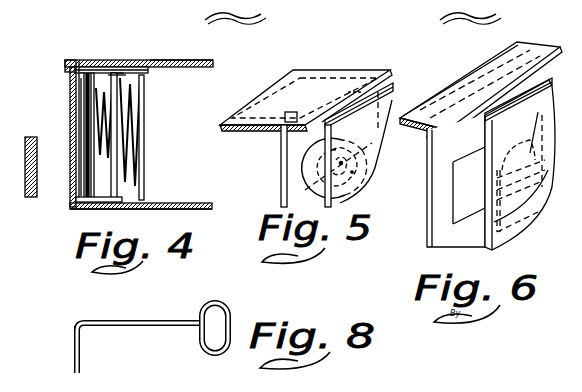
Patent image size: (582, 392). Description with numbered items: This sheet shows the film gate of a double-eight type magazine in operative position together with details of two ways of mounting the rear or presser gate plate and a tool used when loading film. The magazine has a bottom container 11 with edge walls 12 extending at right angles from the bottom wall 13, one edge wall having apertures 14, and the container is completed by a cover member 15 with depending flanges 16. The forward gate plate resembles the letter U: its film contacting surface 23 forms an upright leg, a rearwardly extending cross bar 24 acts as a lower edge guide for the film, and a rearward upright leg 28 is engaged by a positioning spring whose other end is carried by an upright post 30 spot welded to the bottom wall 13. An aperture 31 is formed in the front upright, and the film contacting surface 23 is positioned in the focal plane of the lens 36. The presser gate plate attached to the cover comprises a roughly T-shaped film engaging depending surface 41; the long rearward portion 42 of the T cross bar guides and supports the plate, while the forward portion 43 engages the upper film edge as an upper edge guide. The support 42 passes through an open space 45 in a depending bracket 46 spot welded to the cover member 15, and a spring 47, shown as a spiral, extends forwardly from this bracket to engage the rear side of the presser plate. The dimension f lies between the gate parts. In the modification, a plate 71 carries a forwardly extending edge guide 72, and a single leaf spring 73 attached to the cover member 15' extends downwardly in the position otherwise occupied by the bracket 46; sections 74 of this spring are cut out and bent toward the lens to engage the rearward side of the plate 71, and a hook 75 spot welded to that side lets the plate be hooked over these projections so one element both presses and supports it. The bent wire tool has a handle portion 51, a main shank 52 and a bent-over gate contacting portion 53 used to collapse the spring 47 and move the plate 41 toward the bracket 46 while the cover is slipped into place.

In FIG. 5, the bottom container 11 is at (224, 206).
In FIG. 4, the edge wall 12 is at (71, 190).
In FIG. 4, the bottom wall 13 is at (179, 203).
In FIG. 4, the aperture 14 is at (79, 160).
In FIG. 4, the cover member 15 is at (139, 48).
In FIG. 5, the cover member 15 is at (306, 100).
In FIG. 6, the cover member 15' is at (481, 86).
In FIG. 4, the flange 16 is at (66, 64).
In FIG. 4, the film contacting surface 23 is at (74, 207).
In FIG. 4, the cross bar 24 is at (92, 210).
In FIG. 4, the rearward upright leg 28 is at (144, 85).
In FIG. 4, the upright post 30 is at (146, 110).
In FIG. 4, the aperture 31 is at (88, 176).
In FIG. 4, the lens 36 is at (26, 142).
In FIG. 4, the film engaging depending surface 41 is at (94, 76).
In FIG. 5, the film engaging depending surface 41 is at (372, 165).
In FIG. 4, the long rearward portion 42 is at (151, 63).
In FIG. 5, the long rearward portion 42 is at (309, 78).
In FIG. 4, the forward portion 43 is at (79, 61).
In FIG. 5, the forward portion 43 is at (385, 88).
In FIG. 6, the forward portion 43 is at (396, 84).
In FIG. 5, the open space 45 is at (357, 88).
In FIG. 4, the depending bracket 46 is at (110, 72).
In FIG. 5, the spring 47 is at (305, 160).
In FIG. 8, the handle portion 51 is at (230, 315).
In FIG. 8, the main shank 52 is at (156, 320).
In FIG. 8, the gate contacting portion 53 is at (76, 341).
In FIG. 6, the plate 71 is at (548, 196).
In FIG. 6, the edge guide 72 is at (548, 84).
In FIG. 6, the leaf spring 73 is at (438, 170).
In FIG. 6, the section 74 is at (525, 205).
In FIG. 6, the hook 75 is at (544, 150).
In FIG. 4, the gap f is at (84, 93).